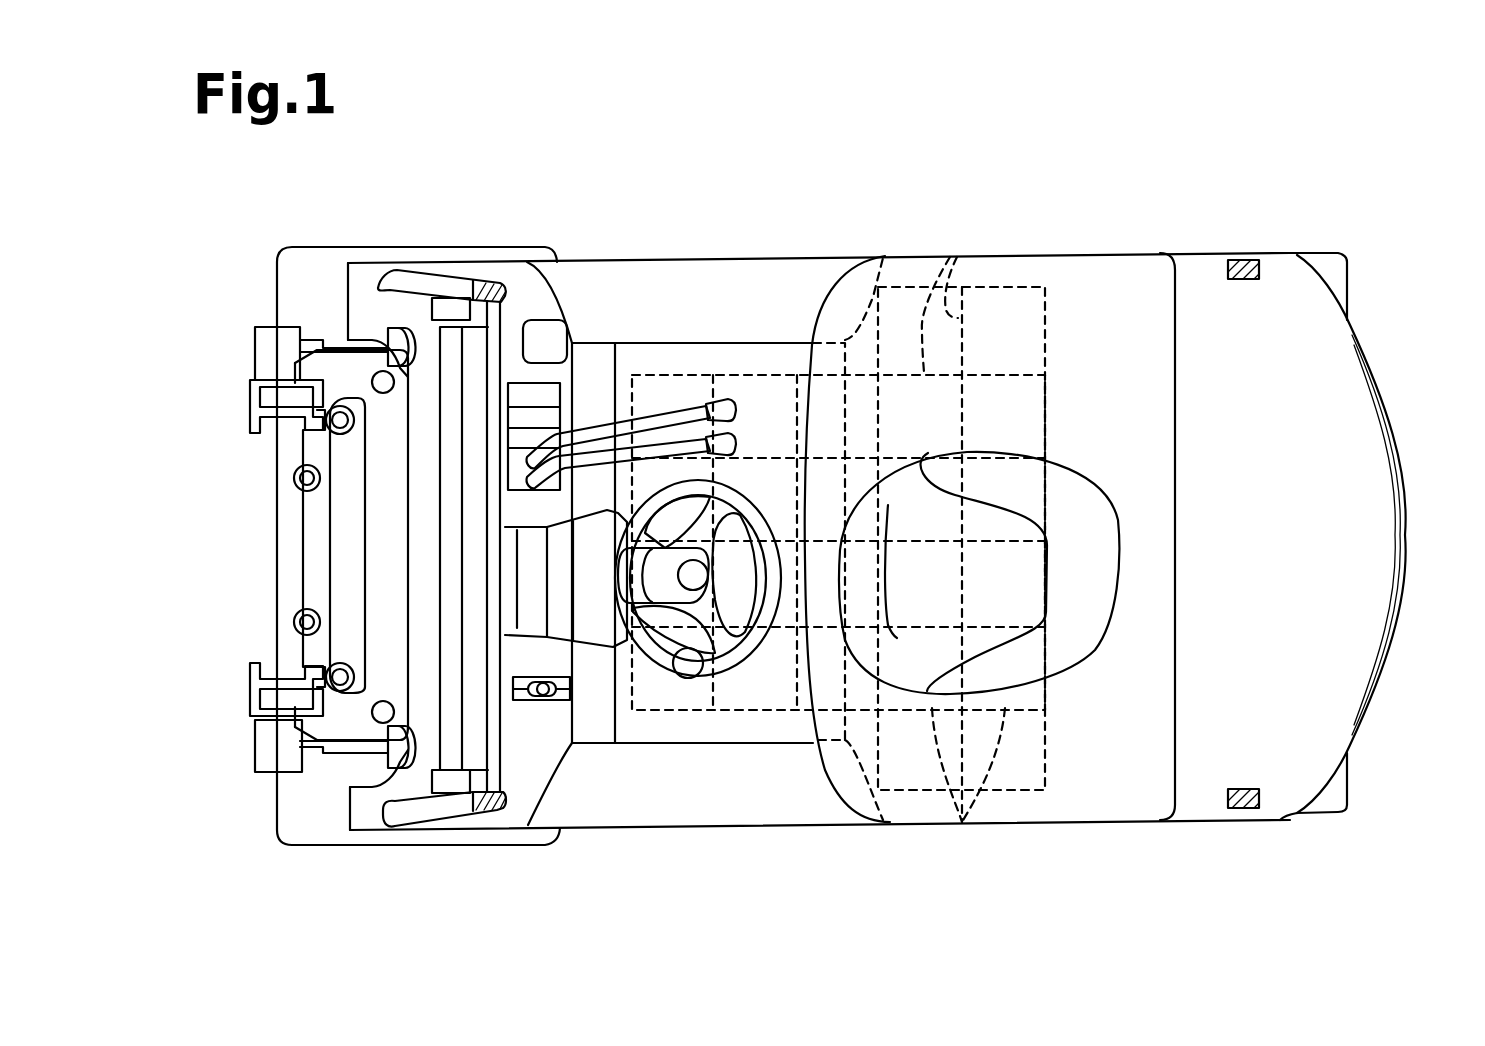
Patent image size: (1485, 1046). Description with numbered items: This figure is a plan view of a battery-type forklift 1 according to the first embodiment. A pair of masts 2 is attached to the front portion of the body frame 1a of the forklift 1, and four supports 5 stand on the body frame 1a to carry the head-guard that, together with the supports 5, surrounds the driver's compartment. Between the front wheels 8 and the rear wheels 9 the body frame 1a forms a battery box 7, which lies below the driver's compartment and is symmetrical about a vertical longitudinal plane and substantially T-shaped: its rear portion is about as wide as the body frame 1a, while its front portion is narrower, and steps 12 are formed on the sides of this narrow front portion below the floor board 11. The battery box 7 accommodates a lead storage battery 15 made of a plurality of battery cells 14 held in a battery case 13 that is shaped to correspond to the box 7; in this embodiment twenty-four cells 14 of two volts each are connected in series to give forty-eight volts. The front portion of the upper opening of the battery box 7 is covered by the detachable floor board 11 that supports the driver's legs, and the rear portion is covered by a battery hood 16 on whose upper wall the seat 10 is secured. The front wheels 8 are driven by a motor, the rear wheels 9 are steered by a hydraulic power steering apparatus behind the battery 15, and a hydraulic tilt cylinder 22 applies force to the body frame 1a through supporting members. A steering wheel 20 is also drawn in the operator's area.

The battery-type forklift 1 is at (1393, 355).
The body frame 1a is at (513, 822).
The masts 2 is at (250, 394).
The supports 5 is at (440, 283).
The battery box 7 is at (1040, 308).
The front wheels 8 is at (333, 252).
The rear wheels 9 is at (1340, 275).
The seat 10 is at (1070, 650).
The floor board 11 is at (763, 728).
The steps 12 is at (692, 265).
The battery case 13 is at (1047, 412).
The battery cells 14 is at (950, 257).
The battery 15 is at (1047, 743).
The battery hood 16 is at (1163, 635).
The steering wheel 20 is at (733, 650).
The hydraulic tilt cylinder 22 is at (388, 328).